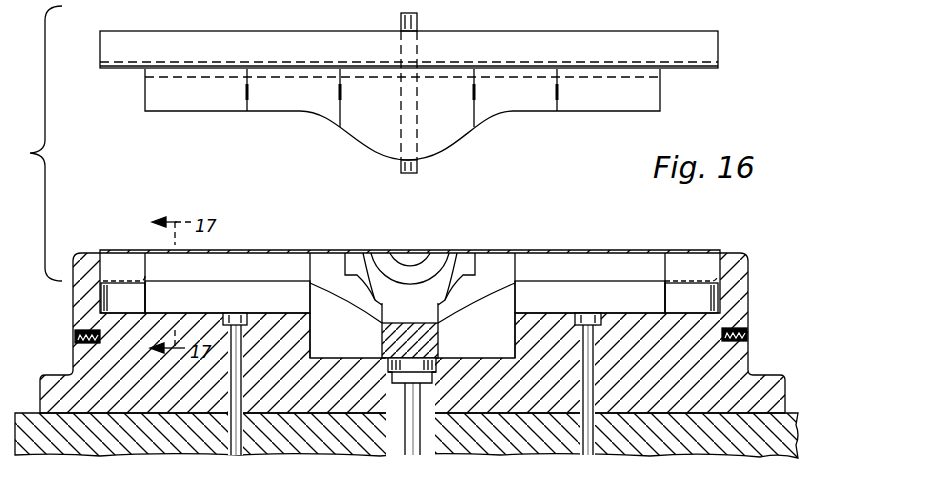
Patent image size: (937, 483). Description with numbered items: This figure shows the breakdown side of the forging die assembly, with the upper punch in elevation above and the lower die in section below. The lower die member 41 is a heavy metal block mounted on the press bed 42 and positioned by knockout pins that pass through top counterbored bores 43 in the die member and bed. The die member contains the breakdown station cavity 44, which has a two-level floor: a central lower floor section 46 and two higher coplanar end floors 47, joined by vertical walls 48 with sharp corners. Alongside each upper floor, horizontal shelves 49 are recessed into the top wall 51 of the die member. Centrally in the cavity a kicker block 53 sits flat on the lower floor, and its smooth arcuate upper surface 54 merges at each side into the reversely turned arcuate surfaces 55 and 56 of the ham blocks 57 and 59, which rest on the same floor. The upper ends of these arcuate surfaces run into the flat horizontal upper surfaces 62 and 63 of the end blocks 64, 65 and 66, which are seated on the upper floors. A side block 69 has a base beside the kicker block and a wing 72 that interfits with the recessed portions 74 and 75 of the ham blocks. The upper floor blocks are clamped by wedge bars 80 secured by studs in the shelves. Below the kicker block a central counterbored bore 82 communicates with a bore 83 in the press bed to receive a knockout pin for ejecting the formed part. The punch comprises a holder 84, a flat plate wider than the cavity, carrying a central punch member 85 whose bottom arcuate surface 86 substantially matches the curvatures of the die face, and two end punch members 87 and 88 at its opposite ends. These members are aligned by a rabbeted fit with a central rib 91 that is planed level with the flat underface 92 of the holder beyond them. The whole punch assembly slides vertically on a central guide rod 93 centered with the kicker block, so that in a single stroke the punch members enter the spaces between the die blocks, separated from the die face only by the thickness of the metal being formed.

The lower die member 41 is at (748, 268).
The press bed 42 is at (496, 457).
The counterbored bores 43 is at (241, 345).
The breakdown station cavity 44 is at (540, 252).
The lower floor section 46 is at (340, 358).
The upper end floors 47 is at (138, 290).
The vertical walls 48 is at (310, 326).
The horizontal shelves 49 is at (110, 280).
The top wall 51 is at (520, 252).
The kicker block 53 is at (448, 346).
The upper surface of kicker block 54 is at (408, 328).
The arcuate surface of ham block 55 is at (396, 264).
The arcuate surface of ham block 56 is at (455, 262).
The ham block 57 is at (346, 304).
The ham block 59 is at (476, 303).
The upper surface of end blocks 62 is at (275, 281).
The upper surface of end blocks 63 is at (602, 281).
The end block 64 is at (290, 468).
The end block 65 is at (236, 475).
The end block 66 is at (590, 297).
The side block 69 is at (430, 262).
The wing 72 is at (350, 262).
The recessed portion 74 is at (366, 262).
The recessed portion 75 is at (447, 255).
The wedge bars 80 is at (672, 258).
The central counterbored bore 82 is at (424, 394).
The bore in press bed 83 is at (421, 452).
The holder 84 is at (718, 42).
The central punch member 85 is at (476, 126).
The arcuate surface 86 is at (353, 128).
The end punch member 87 is at (222, 111).
The end punch member 88 is at (610, 108).
The central rib 91 is at (598, 76).
The underface of holder plate 92 is at (115, 69).
The central guide rod 93 is at (419, 17).